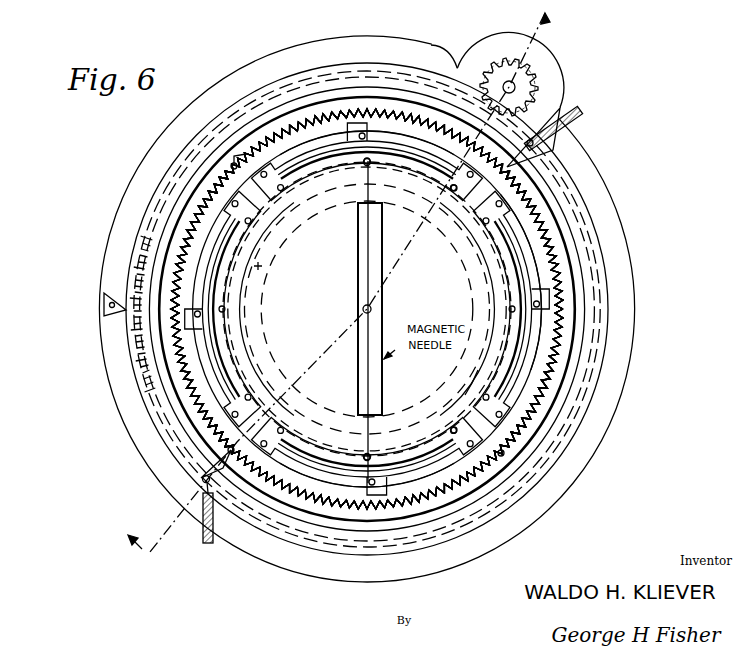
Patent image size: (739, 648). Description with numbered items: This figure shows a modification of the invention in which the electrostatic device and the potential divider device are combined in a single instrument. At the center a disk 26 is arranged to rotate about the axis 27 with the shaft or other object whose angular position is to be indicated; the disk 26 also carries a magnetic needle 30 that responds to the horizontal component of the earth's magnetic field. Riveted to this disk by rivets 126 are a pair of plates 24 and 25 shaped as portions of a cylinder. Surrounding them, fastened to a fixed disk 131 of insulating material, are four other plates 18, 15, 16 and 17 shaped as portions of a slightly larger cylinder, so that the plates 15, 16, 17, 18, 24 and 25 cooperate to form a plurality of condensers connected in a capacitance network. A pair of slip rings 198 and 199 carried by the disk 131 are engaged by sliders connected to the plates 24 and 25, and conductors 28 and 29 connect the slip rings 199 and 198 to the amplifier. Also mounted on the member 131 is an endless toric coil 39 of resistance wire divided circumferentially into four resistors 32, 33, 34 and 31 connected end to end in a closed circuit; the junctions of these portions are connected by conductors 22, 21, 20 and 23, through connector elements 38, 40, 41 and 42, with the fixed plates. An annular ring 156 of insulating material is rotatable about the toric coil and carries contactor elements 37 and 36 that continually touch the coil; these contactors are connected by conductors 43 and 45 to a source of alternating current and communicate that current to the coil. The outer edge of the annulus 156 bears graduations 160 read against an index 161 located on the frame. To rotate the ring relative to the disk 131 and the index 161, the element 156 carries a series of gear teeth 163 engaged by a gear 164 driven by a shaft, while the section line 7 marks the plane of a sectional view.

The section line 7- 7 is at (347, 290).
The plate 15 is at (307, 470).
The plate 16 is at (203, 253).
The plate 17 is at (388, 138).
The plate 18 is at (533, 270).
The conductor 20 is at (470, 472).
The conductor 21 is at (495, 309).
The conductor 22 is at (312, 115).
The conductor 23 is at (232, 353).
The plate 24 is at (393, 152).
The plate 25 is at (297, 440).
The disk 26 is at (367, 309).
The axis 27 is at (371, 307).
The conductor 28 is at (357, 214).
The conductor 29 is at (320, 440).
The magnetic needle 30 is at (383, 377).
The resistor 31 is at (548, 392).
The resistor 32 is at (263, 140).
The resistor 33 is at (190, 397).
The resistor 34 is at (347, 510).
The contactor element 36 is at (203, 481).
The contactor element 37 is at (527, 157).
The connector element 38 is at (505, 172).
The toric coil 39 is at (558, 355).
The connector element 40 is at (231, 166).
The connector element 41 is at (201, 468).
The connector element 42 is at (504, 455).
The conductor 43 is at (208, 545).
The conductor 45 is at (578, 114).
The rivets 126 is at (366, 166).
The fixed disk 131 is at (540, 427).
The annular ring 156 is at (603, 303).
The graduations 160 is at (130, 352).
The index 161 is at (107, 309).
The gear teeth 163 is at (556, 106).
The gear 164 is at (557, 60).
The slip ring 198 is at (262, 266).
The slip ring 199 is at (470, 400).